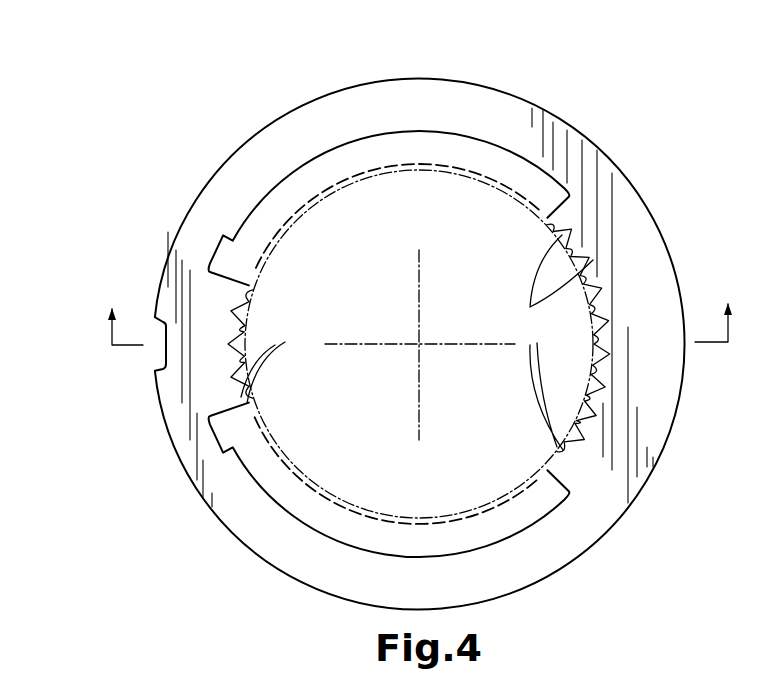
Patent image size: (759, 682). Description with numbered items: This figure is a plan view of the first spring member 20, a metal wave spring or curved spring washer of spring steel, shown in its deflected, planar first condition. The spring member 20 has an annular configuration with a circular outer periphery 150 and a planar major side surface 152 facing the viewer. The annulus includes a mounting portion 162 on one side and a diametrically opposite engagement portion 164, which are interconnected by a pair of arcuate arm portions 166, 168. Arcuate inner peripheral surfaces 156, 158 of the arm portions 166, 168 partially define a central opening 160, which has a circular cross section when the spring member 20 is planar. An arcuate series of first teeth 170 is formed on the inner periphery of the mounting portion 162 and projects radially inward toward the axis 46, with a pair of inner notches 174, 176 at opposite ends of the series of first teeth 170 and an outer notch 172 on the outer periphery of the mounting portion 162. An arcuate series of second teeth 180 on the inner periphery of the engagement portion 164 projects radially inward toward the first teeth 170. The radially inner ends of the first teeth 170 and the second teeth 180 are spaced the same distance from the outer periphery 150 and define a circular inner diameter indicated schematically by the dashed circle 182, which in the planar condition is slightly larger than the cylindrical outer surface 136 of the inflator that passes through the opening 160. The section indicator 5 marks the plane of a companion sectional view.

The first spring member 20 is at (619, 141).
The axis 46 is at (421, 346).
The cylindrical outer surface 136 is at (453, 513).
The circular outer periphery 150 is at (232, 152).
The major side surface 152 is at (445, 107).
The arcuate inner peripheral surface 156 is at (357, 138).
The arcuate inner peripheral surface 158 is at (318, 528).
The central opening 160 is at (494, 287).
The mounting portion 162 is at (156, 408).
The engagement portion 164 is at (682, 399).
The arcuate arm portion 166 is at (339, 81).
The arcuate arm portion 168 is at (297, 586).
The first teeth 170 is at (243, 350).
The outer notch 172 is at (162, 343).
The inner notch 174 is at (220, 253).
The inner notch 176 is at (213, 433).
The second teeth 180 is at (595, 327).
The dashed circle 182 is at (490, 502).
The section line 5 is at (420, 311).